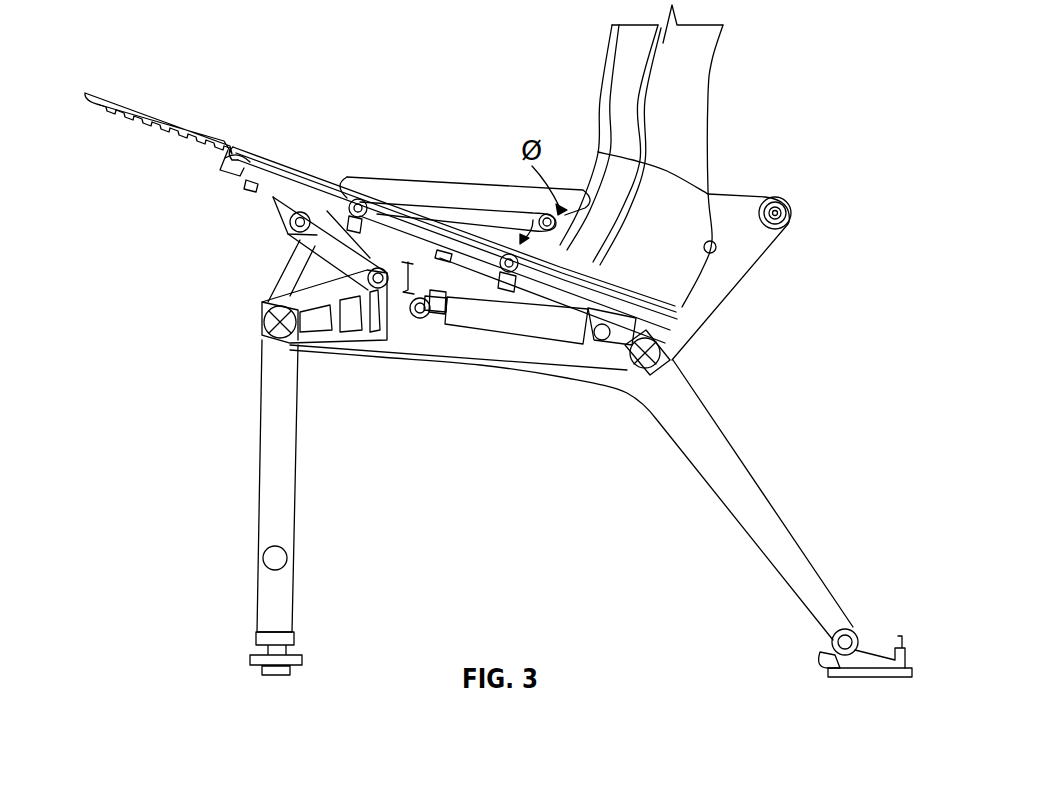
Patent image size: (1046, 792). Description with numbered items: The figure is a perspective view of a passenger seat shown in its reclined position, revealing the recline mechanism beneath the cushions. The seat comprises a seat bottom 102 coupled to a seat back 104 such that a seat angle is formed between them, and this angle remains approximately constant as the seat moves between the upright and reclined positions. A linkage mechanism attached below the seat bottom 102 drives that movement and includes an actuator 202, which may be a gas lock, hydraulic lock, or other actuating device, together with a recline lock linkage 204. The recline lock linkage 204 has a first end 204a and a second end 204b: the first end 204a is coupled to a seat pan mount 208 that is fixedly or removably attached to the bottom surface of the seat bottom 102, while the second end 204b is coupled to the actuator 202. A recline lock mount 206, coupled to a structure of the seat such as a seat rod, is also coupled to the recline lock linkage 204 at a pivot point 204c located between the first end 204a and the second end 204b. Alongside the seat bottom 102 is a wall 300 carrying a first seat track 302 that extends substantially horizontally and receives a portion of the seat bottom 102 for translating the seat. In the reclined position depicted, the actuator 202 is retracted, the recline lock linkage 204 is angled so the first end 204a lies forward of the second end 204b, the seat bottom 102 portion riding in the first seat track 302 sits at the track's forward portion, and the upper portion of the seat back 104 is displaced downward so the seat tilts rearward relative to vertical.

The seat bottom 102 is at (158, 118).
The seat back 104 is at (712, 100).
The actuator 202 is at (553, 345).
The recline lock linkage 204 is at (290, 245).
The first end 204a is at (287, 224).
The second end 204b is at (420, 320).
The pivot point 204c is at (360, 340).
The recline lock mount 206 is at (303, 340).
The seat pan mount 208 is at (287, 211).
The wall 300 is at (377, 178).
The first seat track 302 is at (450, 200).